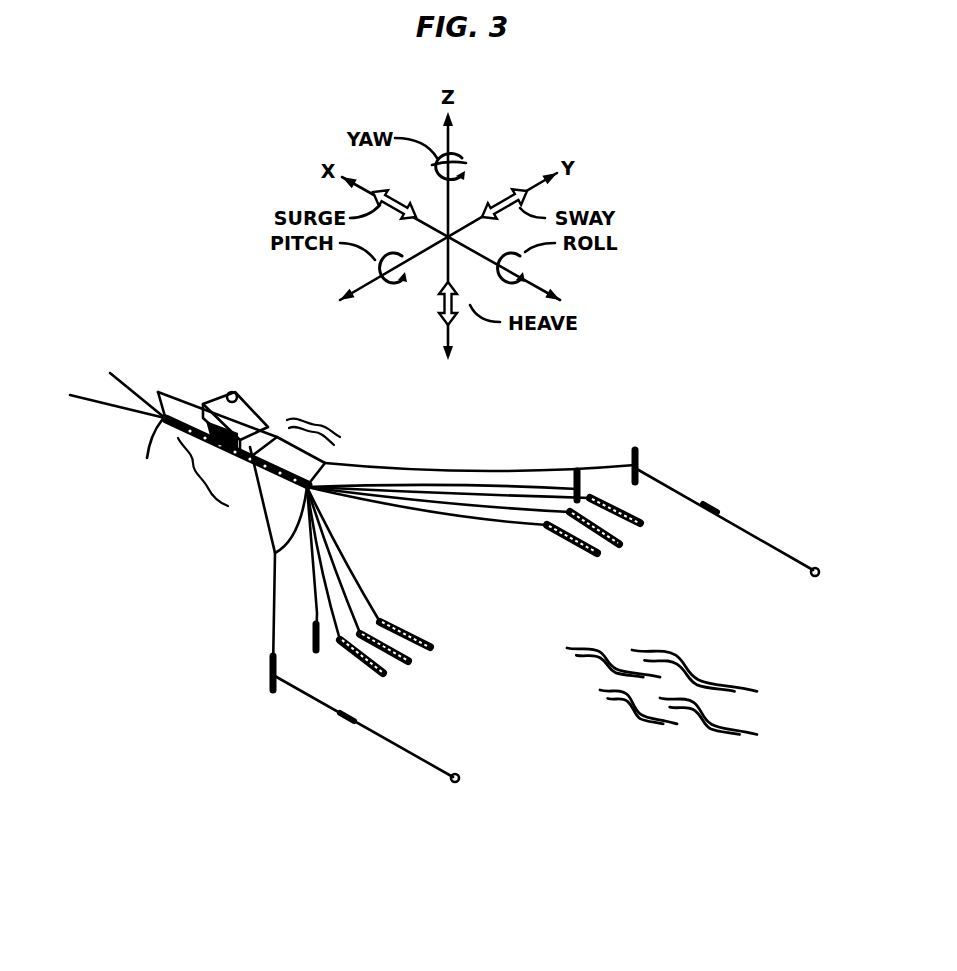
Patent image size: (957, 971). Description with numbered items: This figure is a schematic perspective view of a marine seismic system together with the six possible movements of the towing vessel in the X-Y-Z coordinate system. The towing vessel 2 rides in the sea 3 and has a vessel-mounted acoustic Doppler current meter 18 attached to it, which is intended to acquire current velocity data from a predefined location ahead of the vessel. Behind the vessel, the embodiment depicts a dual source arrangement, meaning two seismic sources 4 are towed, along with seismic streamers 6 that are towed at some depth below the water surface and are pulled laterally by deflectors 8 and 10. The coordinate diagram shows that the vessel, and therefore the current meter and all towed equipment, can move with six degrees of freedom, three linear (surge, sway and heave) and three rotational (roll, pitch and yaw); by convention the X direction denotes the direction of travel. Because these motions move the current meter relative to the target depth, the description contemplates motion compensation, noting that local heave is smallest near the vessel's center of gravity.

The towing vessel 2 is at (280, 410).
The sea 3 is at (668, 694).
The seismic source 4 is at (392, 688).
The seismic streamer 6 is at (407, 752).
The deflector 8 is at (270, 688).
The deflector 10 is at (636, 458).
The vessel-mounted acoustic Doppler current meter 18 is at (146, 455).